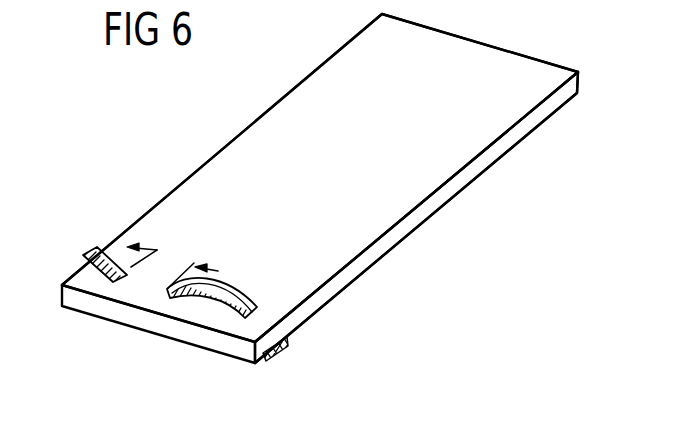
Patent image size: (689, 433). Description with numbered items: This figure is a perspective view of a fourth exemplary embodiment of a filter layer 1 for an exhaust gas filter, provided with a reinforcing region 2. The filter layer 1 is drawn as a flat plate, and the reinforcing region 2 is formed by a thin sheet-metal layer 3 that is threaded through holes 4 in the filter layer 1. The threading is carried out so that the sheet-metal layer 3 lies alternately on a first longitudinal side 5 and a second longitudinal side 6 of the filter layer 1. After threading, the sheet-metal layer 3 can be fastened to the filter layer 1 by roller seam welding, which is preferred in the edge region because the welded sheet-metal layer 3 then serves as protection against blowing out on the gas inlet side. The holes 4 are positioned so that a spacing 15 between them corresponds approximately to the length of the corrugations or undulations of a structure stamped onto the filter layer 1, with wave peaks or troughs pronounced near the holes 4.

The filter layer 1 is at (483, 204).
The reinforcing region 2 is at (288, 345).
The sheet-metal layer 3 is at (88, 267).
The holes 4 is at (130, 267).
The first longitudinal side 5 is at (302, 91).
The second longitudinal side 6 is at (408, 228).
The spacing 15 is at (170, 260).